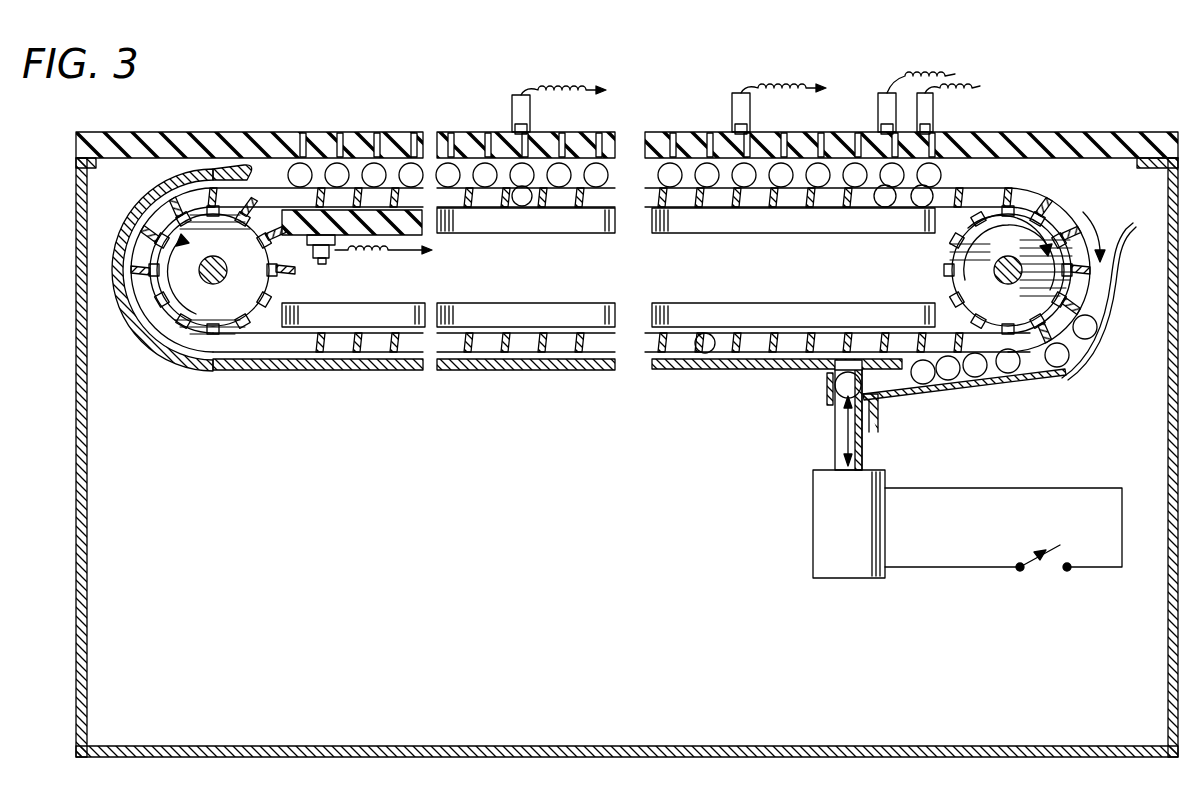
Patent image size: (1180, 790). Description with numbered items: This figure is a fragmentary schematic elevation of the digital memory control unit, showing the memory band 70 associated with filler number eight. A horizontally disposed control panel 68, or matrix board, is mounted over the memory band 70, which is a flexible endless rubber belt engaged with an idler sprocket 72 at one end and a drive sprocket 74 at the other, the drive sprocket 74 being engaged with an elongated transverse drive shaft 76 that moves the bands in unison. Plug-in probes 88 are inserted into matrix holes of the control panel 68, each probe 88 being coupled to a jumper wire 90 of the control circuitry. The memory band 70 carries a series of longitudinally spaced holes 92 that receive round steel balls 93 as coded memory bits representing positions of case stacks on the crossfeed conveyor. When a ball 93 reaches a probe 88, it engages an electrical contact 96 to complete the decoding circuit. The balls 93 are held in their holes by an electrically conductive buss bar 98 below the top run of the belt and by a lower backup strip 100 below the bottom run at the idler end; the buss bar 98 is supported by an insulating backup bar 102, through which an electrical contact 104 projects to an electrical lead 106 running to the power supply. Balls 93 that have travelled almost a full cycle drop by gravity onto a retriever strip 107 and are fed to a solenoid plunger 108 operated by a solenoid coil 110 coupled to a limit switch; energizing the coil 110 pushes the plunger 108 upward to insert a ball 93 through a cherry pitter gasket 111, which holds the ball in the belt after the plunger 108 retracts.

The control panel 68 is at (1002, 132).
The memory band 70 is at (1012, 196).
The idler sprocket 72 is at (272, 283).
The drive sprocket 74 is at (960, 258).
The drive shaft 76 is at (994, 278).
The probe 88 is at (512, 103).
The jumper wire 90 is at (558, 88).
The holes 92 is at (392, 212).
The balls 93 is at (522, 206).
The electrical contact 96 is at (500, 190).
The buss bar 98 is at (800, 190).
The lower backup strip 100 is at (262, 371).
The backup bar 102 is at (680, 222).
The electrical contact 104 is at (308, 232).
The electrical lead 106 is at (396, 252).
The retriever strip 107 is at (1100, 322).
The solenoid plunger 108 is at (865, 448).
The solenoid coil 110 is at (880, 528).
The cherry pitter gasket 111 is at (858, 333).